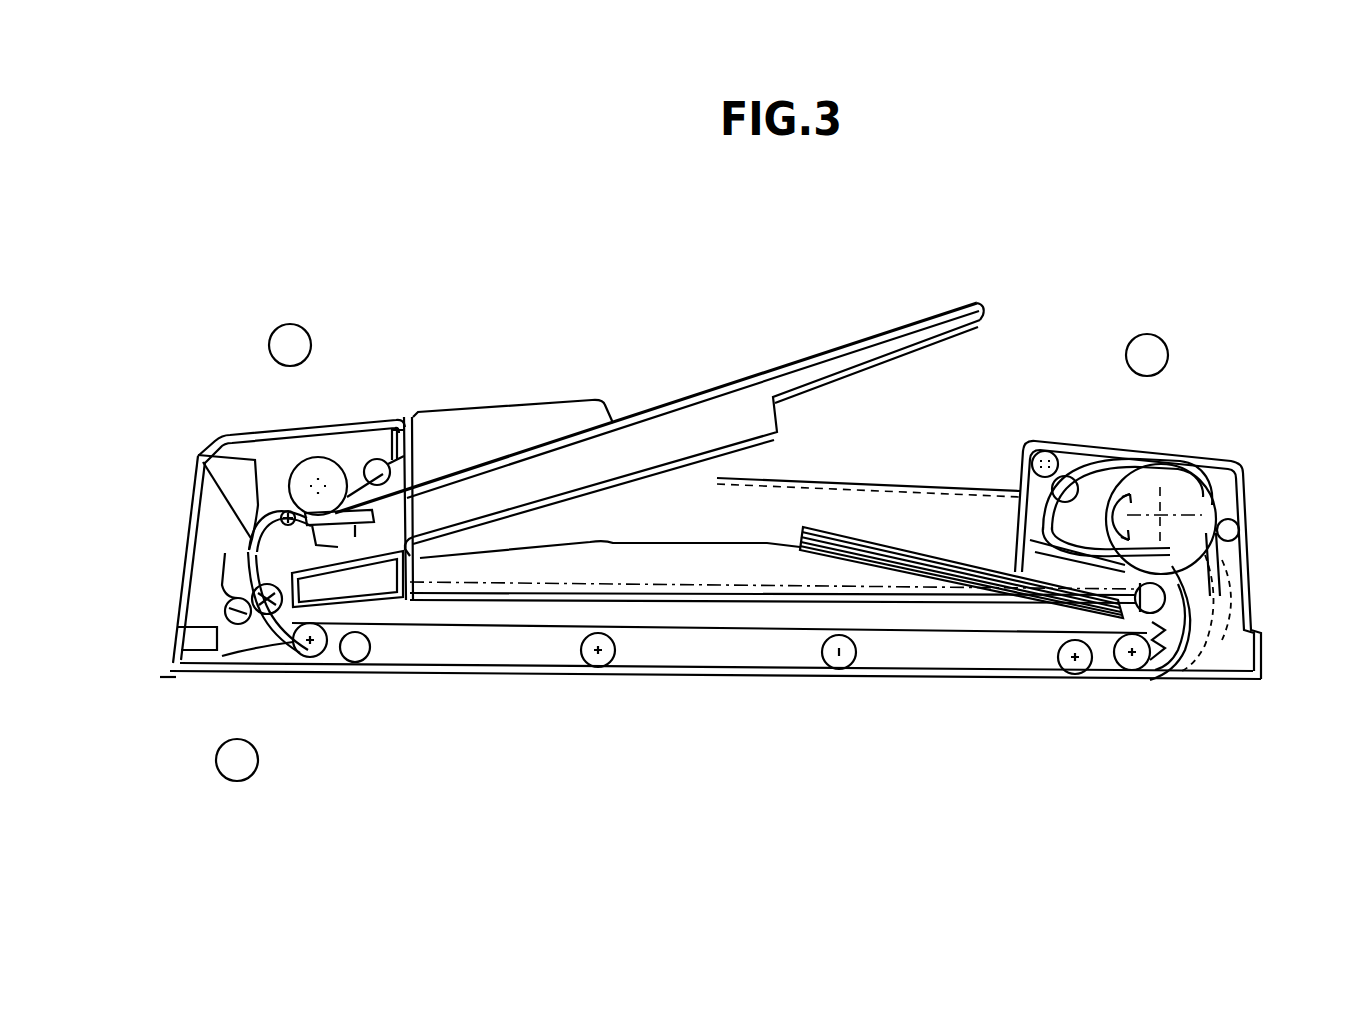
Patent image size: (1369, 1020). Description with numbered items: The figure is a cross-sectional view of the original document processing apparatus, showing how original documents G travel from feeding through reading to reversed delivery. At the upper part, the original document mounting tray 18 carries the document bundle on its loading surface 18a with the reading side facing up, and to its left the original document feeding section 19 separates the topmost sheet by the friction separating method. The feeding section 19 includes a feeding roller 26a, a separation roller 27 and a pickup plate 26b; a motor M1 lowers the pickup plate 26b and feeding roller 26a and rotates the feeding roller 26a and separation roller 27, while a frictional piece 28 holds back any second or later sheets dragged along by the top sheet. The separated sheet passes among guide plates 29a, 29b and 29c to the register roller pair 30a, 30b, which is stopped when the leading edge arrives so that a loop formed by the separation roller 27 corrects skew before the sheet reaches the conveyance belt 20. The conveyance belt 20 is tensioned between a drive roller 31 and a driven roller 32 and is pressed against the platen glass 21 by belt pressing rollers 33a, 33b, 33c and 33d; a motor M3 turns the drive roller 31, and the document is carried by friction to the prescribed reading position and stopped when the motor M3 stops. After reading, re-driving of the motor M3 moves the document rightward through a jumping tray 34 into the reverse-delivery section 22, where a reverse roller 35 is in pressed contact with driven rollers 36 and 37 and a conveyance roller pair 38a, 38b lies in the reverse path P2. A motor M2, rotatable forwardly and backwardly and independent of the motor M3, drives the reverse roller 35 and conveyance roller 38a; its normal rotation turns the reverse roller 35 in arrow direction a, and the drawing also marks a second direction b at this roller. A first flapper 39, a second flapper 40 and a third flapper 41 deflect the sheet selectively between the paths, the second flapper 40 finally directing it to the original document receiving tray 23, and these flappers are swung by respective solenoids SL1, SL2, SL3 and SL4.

The original document mounting tray 18 is at (822, 373).
The loading surface 18a is at (875, 338).
The original document feeding section 19 is at (250, 427).
The conveyance belt 20 is at (353, 617).
The platen glass 21 is at (370, 663).
The reverse-delivery section 22 is at (1223, 445).
The original document receiving tray 23 is at (610, 570).
The feeding roller 26a is at (377, 458).
The pickup plate 26b is at (413, 417).
The separation roller 27 is at (317, 458).
The frictional piece 28 is at (263, 584).
The guide plate 29a is at (248, 547).
The guide plate 29b is at (232, 557).
The guide plate 29c is at (203, 497).
The register roller 30a is at (347, 579).
The register roller 30b is at (230, 612).
The drive roller 31 is at (288, 613).
The driven roller 32 is at (1140, 662).
The belt pressing roller 33a is at (373, 648).
The belt pressing roller 33b is at (600, 658).
The belt pressing roller 33c is at (847, 660).
The belt pressing roller 33d is at (1068, 670).
The jumping tray 34 is at (1168, 674).
The reverse roller 35 is at (1155, 473).
The driven roller 36 is at (1127, 577).
The driven roller 37 is at (1240, 529).
The conveyance roller 38a is at (1127, 507).
The conveyance roller 38b is at (1032, 458).
The first flapper 39 is at (1177, 648).
The second flapper 40 is at (1097, 572).
The third flapper 41 is at (1207, 552).
The motor M1 is at (365, 460).
The motor M2 is at (1082, 505).
The motor M3 is at (307, 637).
The reverse path P2 is at (1083, 458).
The original document G is at (620, 412).
The arrow direction a is at (1141, 545).
The rotation direction b is at (1130, 514).
The solenoid SL1 is at (1187, 645).
The solenoid SL2 is at (1037, 558).
The solenoid SL3 is at (1230, 568).
The solenoid SL4 is at (1223, 593).